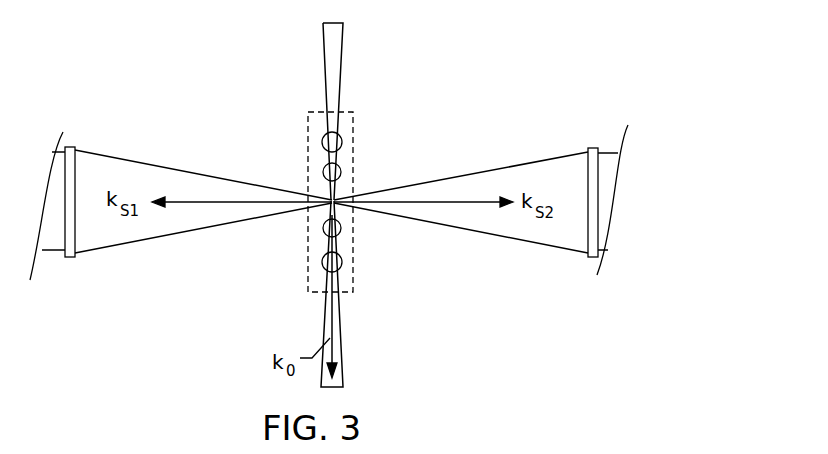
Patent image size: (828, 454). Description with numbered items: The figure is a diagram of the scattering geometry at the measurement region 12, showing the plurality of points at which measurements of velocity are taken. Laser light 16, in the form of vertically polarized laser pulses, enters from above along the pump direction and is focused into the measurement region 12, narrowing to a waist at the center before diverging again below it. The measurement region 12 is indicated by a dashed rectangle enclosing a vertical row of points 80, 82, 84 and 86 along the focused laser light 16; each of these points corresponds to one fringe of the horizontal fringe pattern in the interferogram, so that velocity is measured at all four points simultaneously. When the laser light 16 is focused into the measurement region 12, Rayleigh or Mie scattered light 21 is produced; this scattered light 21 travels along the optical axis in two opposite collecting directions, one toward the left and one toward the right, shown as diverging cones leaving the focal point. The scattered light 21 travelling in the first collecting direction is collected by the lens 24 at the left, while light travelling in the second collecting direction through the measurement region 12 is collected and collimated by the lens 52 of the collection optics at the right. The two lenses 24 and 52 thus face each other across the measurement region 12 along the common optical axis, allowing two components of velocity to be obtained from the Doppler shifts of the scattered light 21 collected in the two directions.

The measurement region 12 is at (355, 242).
The laser light 16 is at (342, 75).
The scattered light 21 is at (223, 179).
The lens 24 is at (70, 147).
The lens 52 is at (593, 148).
The point 80 is at (338, 132).
The point 82 is at (338, 170).
The point 84 is at (325, 234).
The point 86 is at (323, 270).